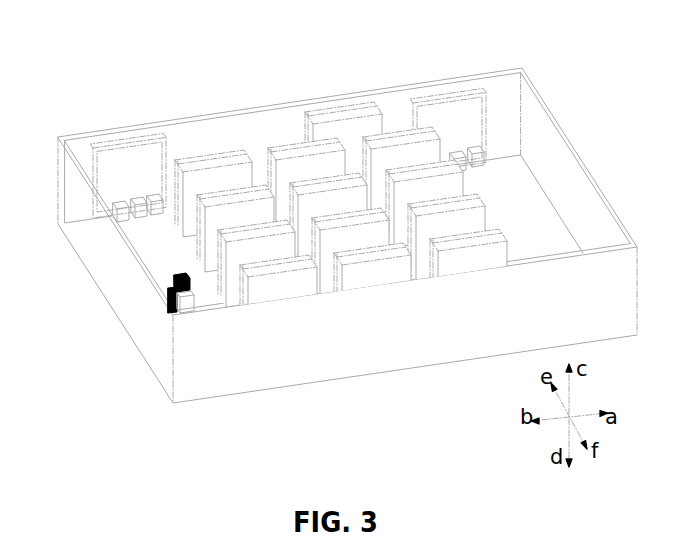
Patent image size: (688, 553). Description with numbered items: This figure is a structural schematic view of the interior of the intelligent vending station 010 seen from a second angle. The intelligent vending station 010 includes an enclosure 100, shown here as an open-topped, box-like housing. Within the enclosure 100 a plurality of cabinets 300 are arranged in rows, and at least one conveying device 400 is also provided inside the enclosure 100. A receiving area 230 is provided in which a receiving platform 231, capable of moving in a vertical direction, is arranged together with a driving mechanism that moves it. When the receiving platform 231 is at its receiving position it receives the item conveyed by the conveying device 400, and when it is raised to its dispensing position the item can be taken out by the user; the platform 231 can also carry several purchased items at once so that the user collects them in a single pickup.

The intelligent vending station 010 is at (410, 33).
The enclosure 100 is at (568, 136).
The receiving area 230 is at (158, 208).
The receiving platform 231 is at (132, 199).
The cabinets 300 is at (305, 158).
The conveying device 400 is at (167, 311).